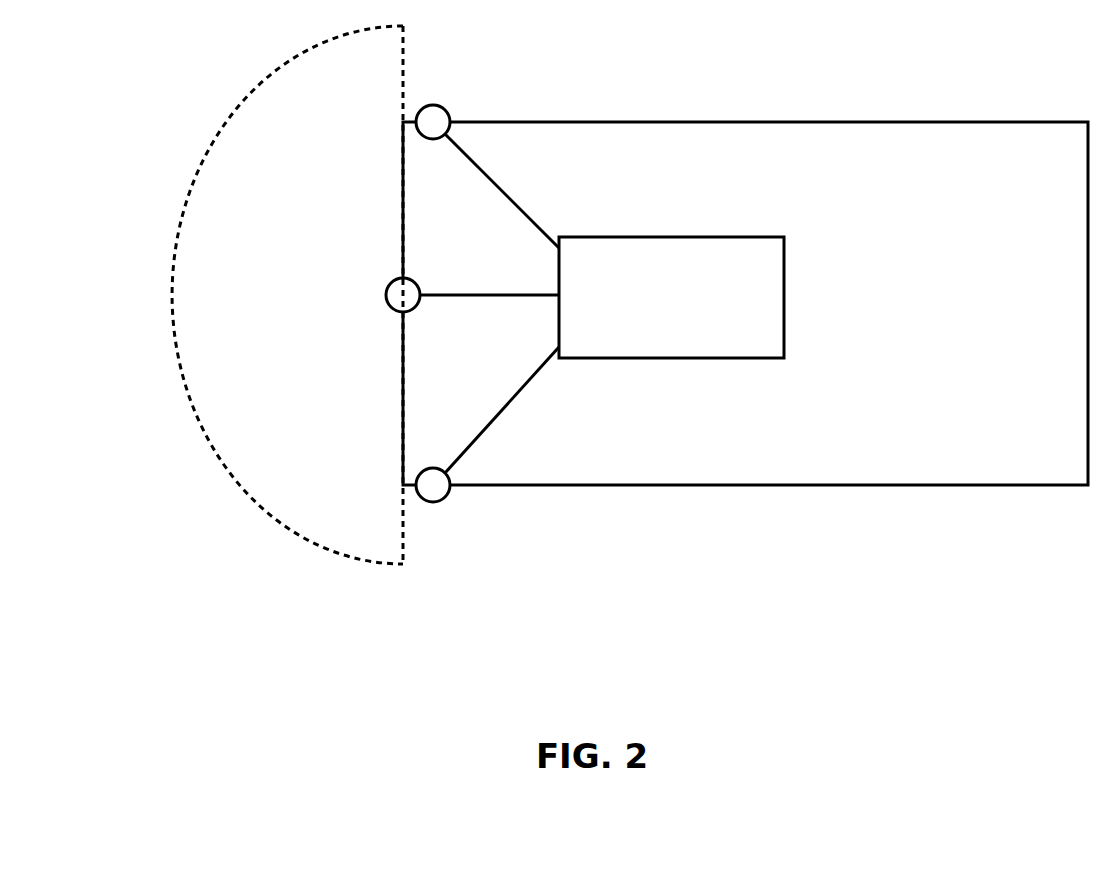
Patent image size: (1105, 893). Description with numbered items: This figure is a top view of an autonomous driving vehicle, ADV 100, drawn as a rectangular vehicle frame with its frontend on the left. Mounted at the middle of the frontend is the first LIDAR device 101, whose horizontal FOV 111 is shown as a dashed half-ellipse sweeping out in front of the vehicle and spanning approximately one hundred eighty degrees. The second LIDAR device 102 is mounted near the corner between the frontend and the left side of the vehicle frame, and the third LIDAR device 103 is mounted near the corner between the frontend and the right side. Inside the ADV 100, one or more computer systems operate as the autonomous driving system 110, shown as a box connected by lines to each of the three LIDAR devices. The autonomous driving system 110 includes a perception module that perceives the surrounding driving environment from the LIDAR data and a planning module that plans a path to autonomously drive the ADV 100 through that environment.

The autonomous driving vehicle (ADV) 100 is at (992, 462).
The autonomous driving system 110 is at (651, 341).
The first LIDAR device 101 is at (414, 283).
The second LIDAR device 102 is at (444, 499).
The third LIDAR device 103 is at (443, 109).
The horizontal FOV 111 is at (216, 130).